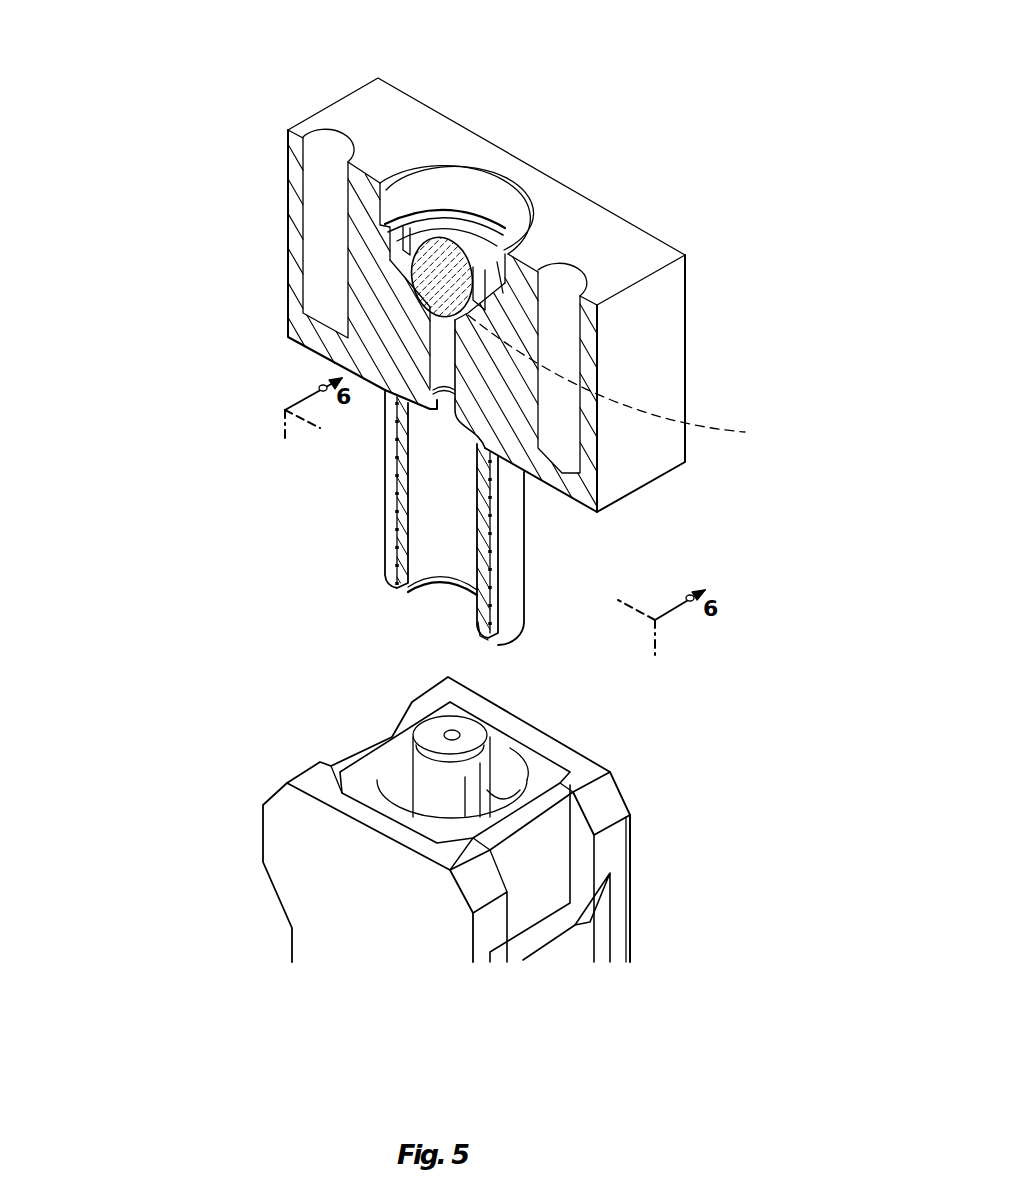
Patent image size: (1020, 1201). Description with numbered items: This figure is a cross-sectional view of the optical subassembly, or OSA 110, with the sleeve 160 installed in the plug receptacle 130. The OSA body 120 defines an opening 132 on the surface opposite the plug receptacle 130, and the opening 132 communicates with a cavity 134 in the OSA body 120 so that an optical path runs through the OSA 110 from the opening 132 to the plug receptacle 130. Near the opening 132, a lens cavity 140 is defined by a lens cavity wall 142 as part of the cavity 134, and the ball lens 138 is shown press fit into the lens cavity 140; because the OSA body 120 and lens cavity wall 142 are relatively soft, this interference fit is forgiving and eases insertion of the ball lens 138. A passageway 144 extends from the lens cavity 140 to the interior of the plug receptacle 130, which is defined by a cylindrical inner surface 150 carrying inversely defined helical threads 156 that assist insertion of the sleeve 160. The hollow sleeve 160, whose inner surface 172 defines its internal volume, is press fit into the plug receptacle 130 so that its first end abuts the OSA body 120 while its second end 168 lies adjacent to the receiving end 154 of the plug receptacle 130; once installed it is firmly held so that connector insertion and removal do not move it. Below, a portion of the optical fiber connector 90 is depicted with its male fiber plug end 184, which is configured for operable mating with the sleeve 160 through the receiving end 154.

The optical fiber connector 90 is at (351, 819).
The optical subassembly (OSA) 110 is at (662, 207).
The OSA body 120 is at (703, 362).
The plug receptacle 130 is at (475, 550).
The opening 132 is at (418, 130).
The cavity 134 is at (468, 196).
The ball lens 138 is at (428, 280).
The lens cavity 140 is at (626, 379).
The lens cavity wall 142 is at (420, 236).
The passageway 144 is at (445, 343).
The inner surface 150 is at (395, 549).
The receiving end 154 is at (492, 655).
The threads 156 is at (500, 519).
The sleeve 160 is at (398, 600).
The second end 168 is at (487, 628).
The inner surface 172 is at (443, 482).
The male fiber plug end 184 is at (432, 782).